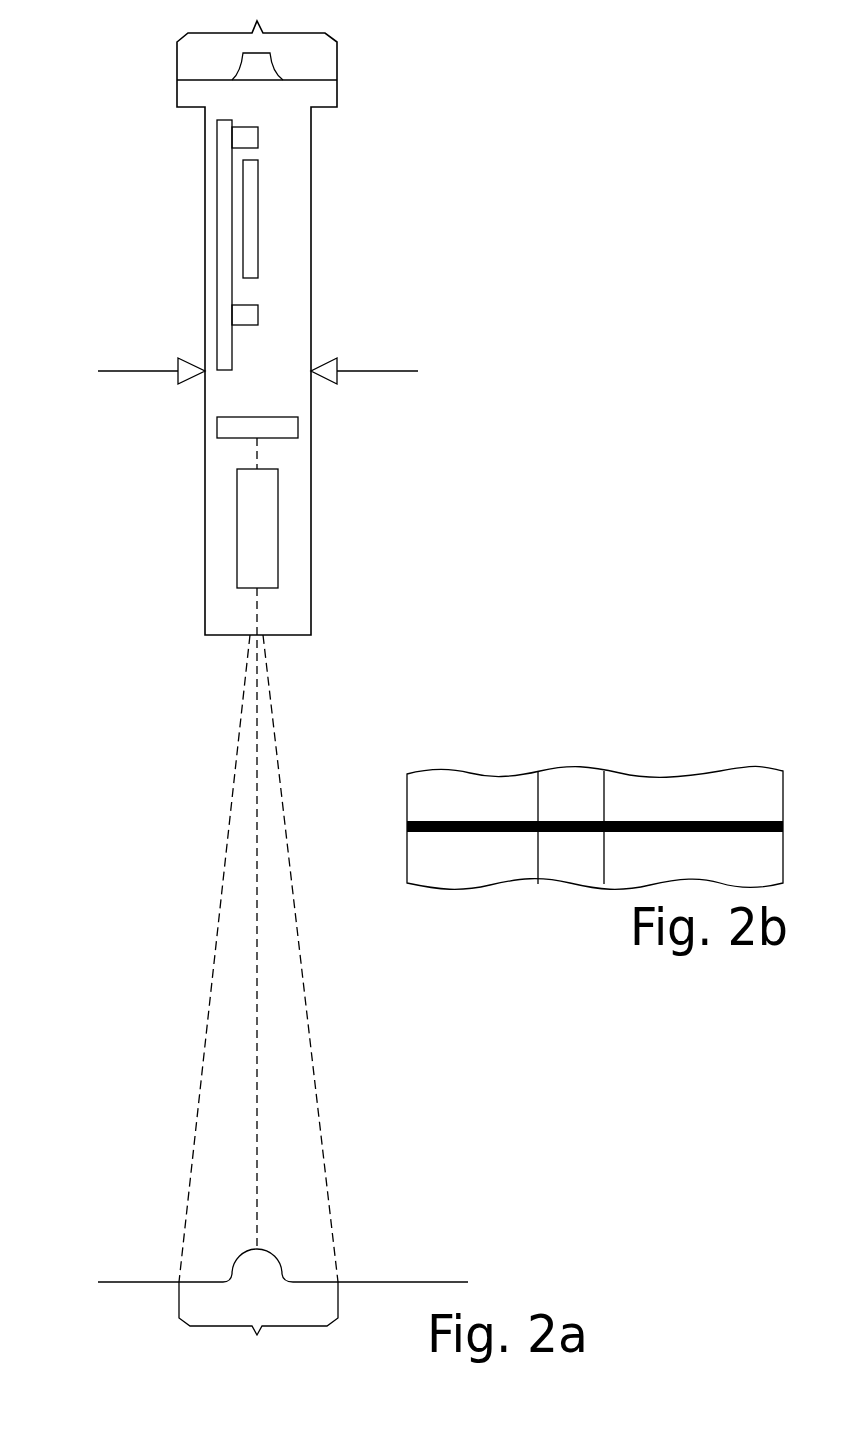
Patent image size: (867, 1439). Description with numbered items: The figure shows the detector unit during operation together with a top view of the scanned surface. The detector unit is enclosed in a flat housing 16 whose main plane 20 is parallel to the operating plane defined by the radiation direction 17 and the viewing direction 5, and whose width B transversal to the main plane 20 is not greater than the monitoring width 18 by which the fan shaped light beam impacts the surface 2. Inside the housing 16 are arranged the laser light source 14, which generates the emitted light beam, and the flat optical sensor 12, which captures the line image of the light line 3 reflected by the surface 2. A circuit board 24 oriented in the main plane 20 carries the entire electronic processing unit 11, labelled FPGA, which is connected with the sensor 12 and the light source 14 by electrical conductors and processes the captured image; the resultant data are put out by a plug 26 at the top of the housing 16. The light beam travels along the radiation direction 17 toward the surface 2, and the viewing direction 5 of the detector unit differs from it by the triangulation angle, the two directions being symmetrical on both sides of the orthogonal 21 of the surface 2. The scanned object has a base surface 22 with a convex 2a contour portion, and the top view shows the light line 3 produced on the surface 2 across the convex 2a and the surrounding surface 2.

In FIG. 2a, the surface 2 is at (415, 1282).
In FIG. 2b, the surface 2 is at (595, 827).
In FIG. 2a, the convex 2a is at (269, 1262).
In FIG. 2b, the convex 2a is at (571, 827).
In FIG. 2a, the light line 3 is at (310, 998).
In FIG. 2b, the light line 3 is at (725, 820).
In FIG. 2a, the viewing direction 5 is at (336, 860).
In FIG. 2a, the electronic processing unit 11 is at (259, 297).
In FIG. 2a, the optical sensor 12 is at (282, 429).
In FIG. 2a, the laser light source 14 is at (263, 542).
In FIG. 2a, the housing 16 is at (311, 318).
In FIG. 2a, the radiation direction 17 is at (336, 860).
In FIG. 2a, the monitoring width 18 is at (258, 1324).
In FIG. 2a, the main plane 20 is at (336, 860).
In FIG. 2a, the orthogonal 21 is at (257, 727).
In FIG. 2a, the base surface 22 is at (140, 1282).
In FIG. 2a, the circuit board 24 is at (226, 344).
In FIG. 2a, the plug 26 is at (257, 68).
In FIG. 2a, the width B is at (259, 9).
In FIG. 2a, the field programmable gate array FPGA is at (252, 205).